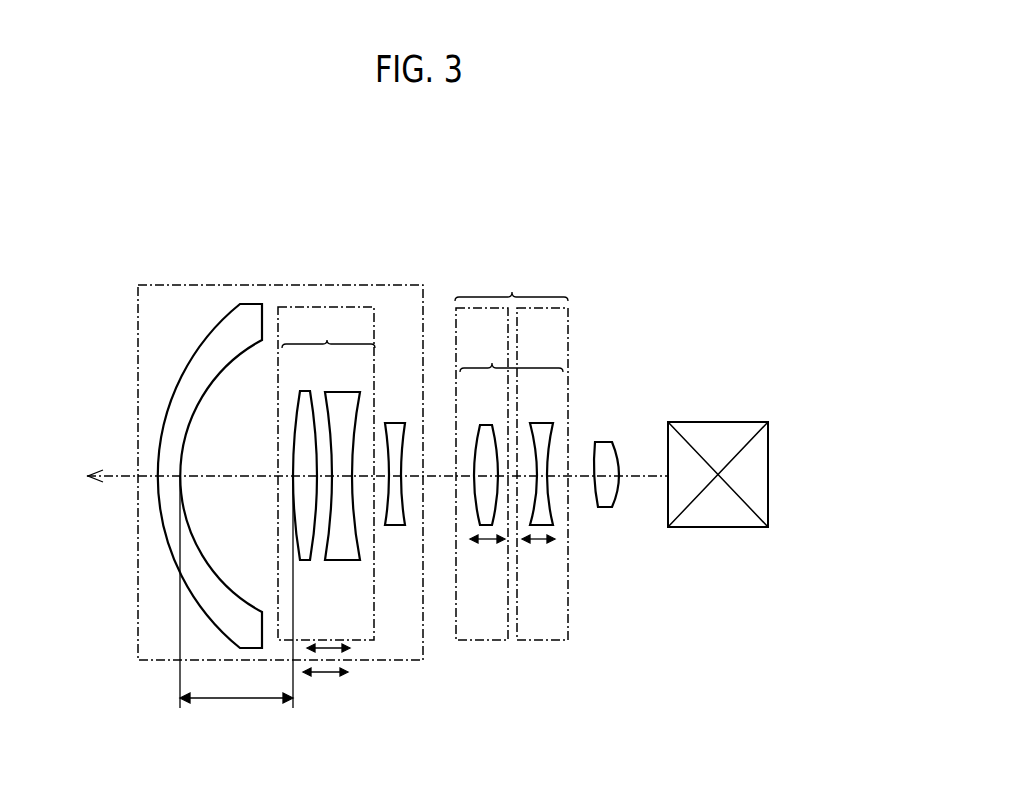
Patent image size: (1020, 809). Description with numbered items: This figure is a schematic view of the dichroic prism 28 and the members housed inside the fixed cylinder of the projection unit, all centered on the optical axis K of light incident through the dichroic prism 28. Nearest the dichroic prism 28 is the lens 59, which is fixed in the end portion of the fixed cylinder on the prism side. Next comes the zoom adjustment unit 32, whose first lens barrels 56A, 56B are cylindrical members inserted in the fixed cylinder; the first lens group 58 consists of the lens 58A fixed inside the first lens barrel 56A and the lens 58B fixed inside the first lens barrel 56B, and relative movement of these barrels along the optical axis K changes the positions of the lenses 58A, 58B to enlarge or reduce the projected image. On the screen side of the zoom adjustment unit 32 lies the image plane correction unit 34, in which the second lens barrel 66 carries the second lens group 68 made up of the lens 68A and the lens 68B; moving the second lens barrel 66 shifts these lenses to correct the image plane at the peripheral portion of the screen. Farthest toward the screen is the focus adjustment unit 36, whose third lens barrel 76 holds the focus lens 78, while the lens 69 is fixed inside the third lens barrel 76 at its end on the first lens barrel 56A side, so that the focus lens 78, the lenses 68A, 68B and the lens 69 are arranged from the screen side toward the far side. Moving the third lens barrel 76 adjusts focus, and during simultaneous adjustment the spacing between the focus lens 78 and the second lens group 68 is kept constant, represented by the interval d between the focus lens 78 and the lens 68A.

The dichroic prism 28 is at (720, 422).
The zoom adjustment unit 32 is at (511, 280).
The image plane correction unit 34 is at (338, 301).
The focus adjustment unit 36 is at (234, 271).
The first lens barrel 56A is at (483, 643).
The first lens barrel 56B is at (540, 643).
The first lens group 58 is at (511, 351).
The lens 58A is at (485, 425).
The lens 58B is at (540, 423).
The lens 59 is at (607, 442).
The second lens barrel 66 is at (308, 307).
The second lens group 68 is at (328, 328).
The lens 68A is at (307, 391).
The lens 68B is at (352, 392).
The lens 69 is at (394, 423).
The third lens barrel 76 is at (190, 285).
The focus lens 78 is at (190, 345).
The optical axis K is at (125, 475).
The interval d is at (235, 701).